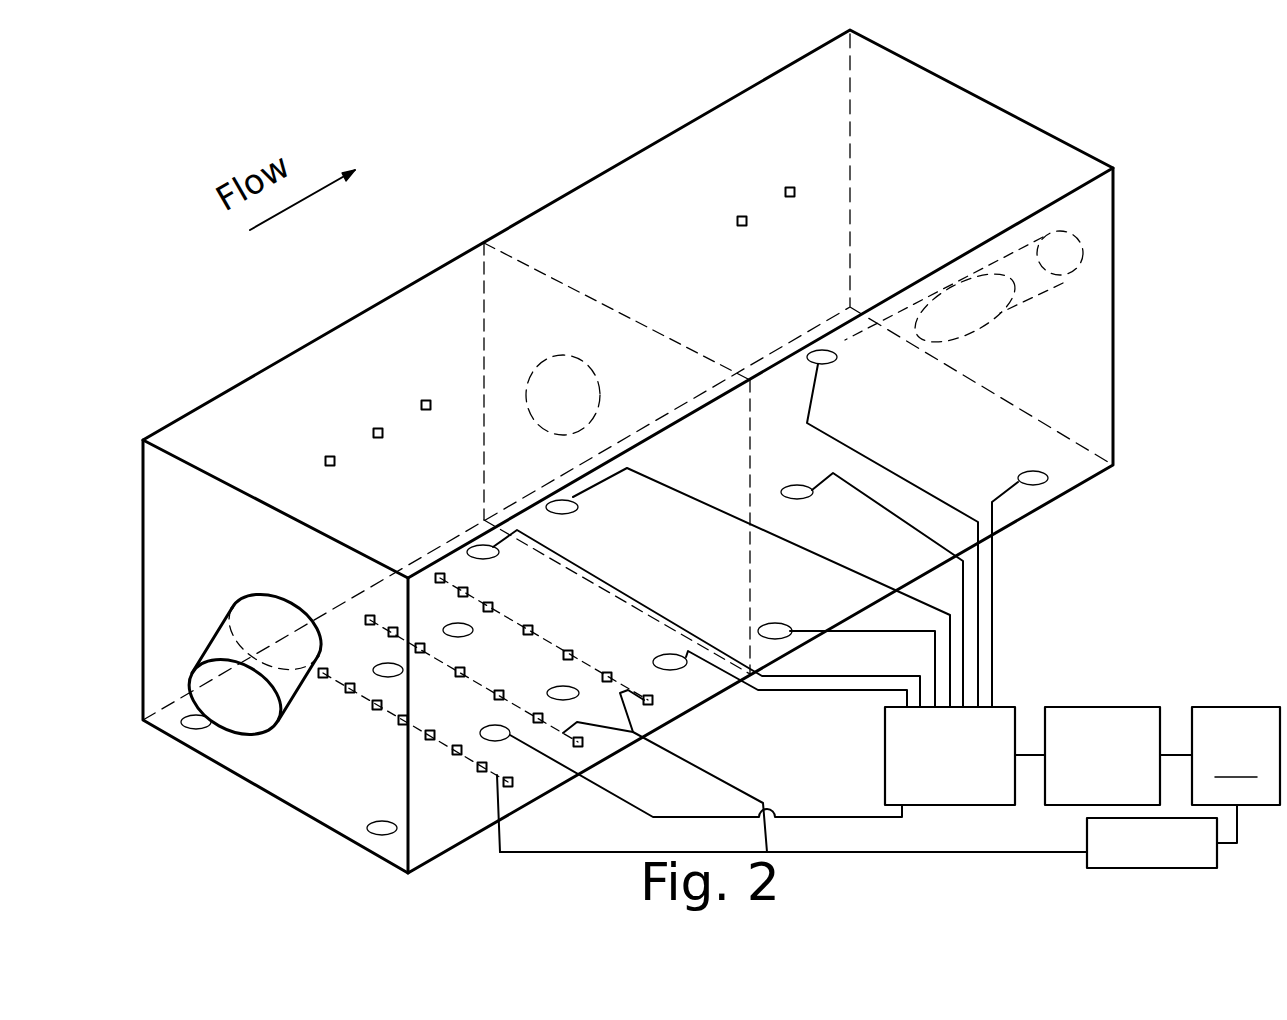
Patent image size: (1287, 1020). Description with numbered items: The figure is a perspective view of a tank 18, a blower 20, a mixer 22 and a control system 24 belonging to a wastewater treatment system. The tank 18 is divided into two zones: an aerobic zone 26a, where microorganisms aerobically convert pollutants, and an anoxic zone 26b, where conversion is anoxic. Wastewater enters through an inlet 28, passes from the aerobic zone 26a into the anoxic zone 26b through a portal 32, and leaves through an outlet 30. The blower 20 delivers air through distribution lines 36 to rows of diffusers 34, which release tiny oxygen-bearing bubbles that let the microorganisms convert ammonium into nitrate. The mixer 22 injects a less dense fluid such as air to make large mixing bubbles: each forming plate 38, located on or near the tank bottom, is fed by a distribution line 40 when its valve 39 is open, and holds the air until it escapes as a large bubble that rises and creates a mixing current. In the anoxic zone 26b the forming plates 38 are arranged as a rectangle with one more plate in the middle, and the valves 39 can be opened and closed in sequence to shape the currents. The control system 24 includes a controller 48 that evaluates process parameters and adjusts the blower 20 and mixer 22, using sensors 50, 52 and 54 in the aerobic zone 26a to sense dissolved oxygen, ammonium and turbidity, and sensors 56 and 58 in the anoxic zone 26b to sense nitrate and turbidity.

The tank 18 is at (243, 322).
The blower 20 is at (1150, 869).
The mixer 22 is at (1100, 707).
The control system 24 is at (1240, 707).
The aerobic zone 26a is at (430, 328).
The anoxic zone 26b is at (612, 220).
The inlet 28 is at (242, 735).
The outlet 30 is at (1012, 255).
The portal 32 is at (563, 355).
The diffusers 34 is at (440, 573).
The distribution lines 36 is at (397, 717).
The forming plate 38 is at (1040, 474).
The valve 39 is at (950, 805).
The distribution line 40 is at (840, 437).
The controller 48 is at (1238, 757).
The sensor 50 is at (329, 456).
The sensor 52 is at (377, 428).
The sensor 54 is at (425, 400).
The sensor 56 is at (742, 216).
The sensor 58 is at (790, 187).